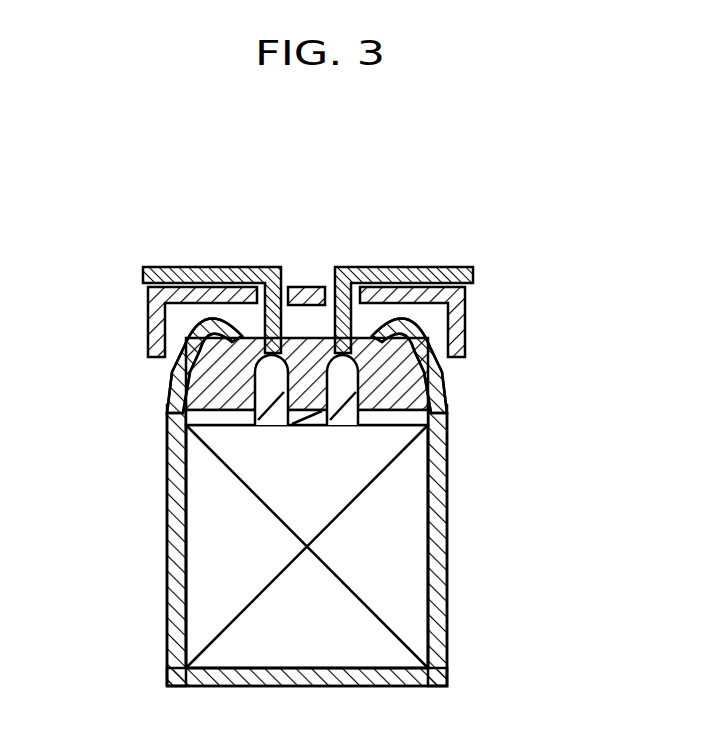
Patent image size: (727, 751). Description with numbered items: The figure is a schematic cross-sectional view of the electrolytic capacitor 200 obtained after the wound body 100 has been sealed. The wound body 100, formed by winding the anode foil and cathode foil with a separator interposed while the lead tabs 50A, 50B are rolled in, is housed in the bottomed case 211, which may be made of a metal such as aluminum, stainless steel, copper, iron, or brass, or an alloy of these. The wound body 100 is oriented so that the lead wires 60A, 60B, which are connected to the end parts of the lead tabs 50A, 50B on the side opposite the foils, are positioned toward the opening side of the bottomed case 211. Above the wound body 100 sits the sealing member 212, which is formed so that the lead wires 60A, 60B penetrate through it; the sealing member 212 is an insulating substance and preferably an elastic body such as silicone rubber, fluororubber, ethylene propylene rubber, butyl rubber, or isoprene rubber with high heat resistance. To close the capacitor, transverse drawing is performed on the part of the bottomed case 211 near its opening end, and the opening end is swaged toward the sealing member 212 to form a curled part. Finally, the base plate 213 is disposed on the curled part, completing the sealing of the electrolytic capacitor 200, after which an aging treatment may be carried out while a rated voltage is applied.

The electrolytic capacitor 200 is at (310, 279).
The bottomed case 211 is at (440, 501).
The sealing member 212 is at (432, 378).
The base plate 213 is at (150, 308).
The lead wire 60A is at (210, 267).
The lead wire 60B is at (415, 267).
The lead tab 50A is at (270, 381).
The lead tab 50B is at (345, 400).
The wound body 100 is at (218, 528).